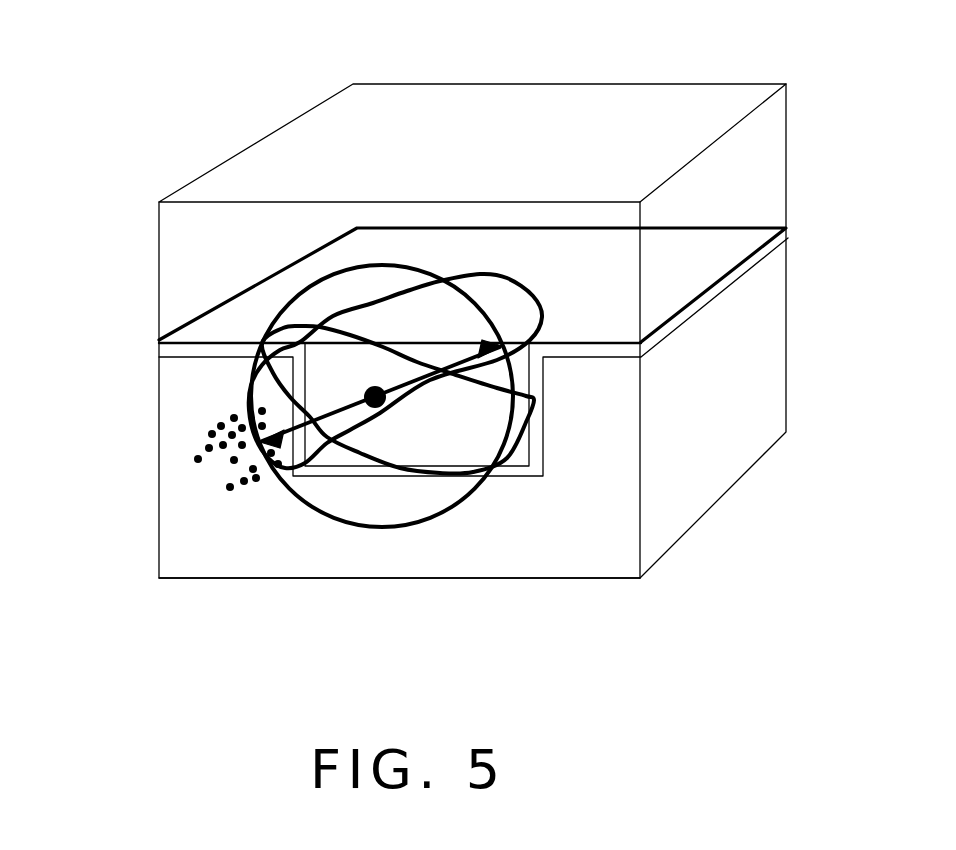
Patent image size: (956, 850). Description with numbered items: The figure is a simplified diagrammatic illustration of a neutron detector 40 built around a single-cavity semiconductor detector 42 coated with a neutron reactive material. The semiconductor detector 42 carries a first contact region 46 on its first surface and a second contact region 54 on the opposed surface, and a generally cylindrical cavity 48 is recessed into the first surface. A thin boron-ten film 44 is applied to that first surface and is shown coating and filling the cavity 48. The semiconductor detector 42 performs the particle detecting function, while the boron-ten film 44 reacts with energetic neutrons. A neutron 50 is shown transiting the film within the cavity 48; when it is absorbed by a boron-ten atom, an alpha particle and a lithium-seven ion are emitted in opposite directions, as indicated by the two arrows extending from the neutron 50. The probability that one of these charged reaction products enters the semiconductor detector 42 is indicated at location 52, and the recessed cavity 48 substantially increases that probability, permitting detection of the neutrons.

The neutron detector 40 is at (460, 347).
The semiconductor detector 42 is at (598, 559).
The Boron-10 film 44 is at (638, 103).
The first contact region 46 is at (583, 355).
The cylindrical cavity 48 is at (325, 372).
The neutron 50 is at (400, 477).
The location of charged particle reaction product entry 52 is at (225, 467).
The second contact region 54 is at (338, 578).